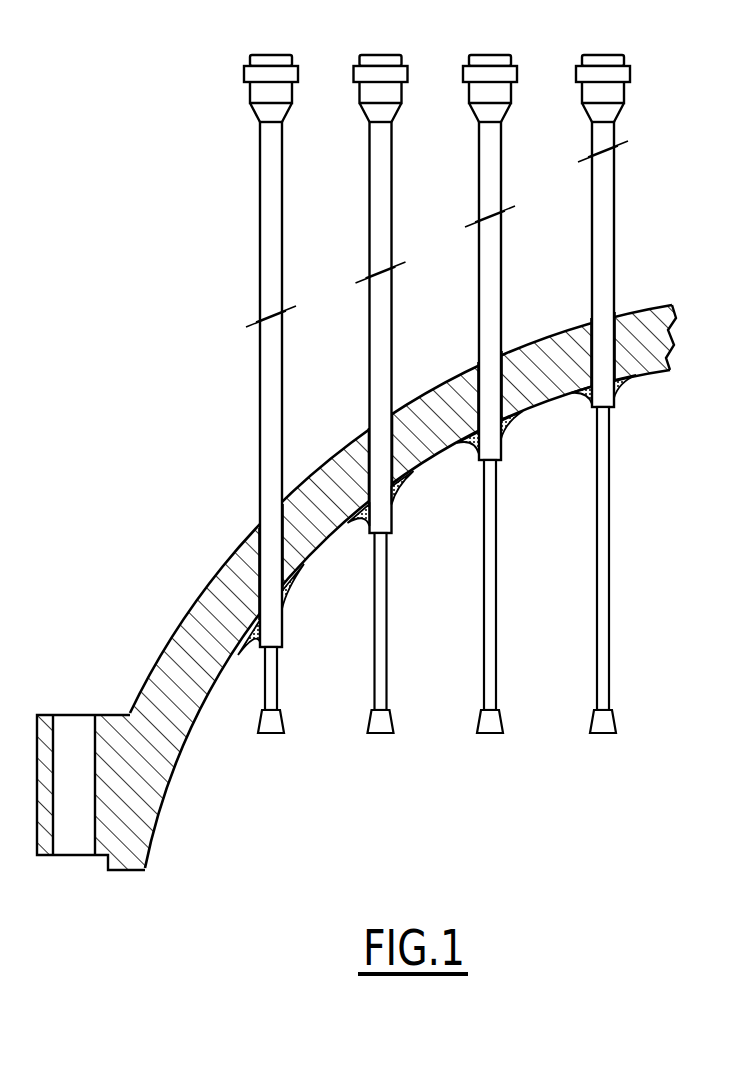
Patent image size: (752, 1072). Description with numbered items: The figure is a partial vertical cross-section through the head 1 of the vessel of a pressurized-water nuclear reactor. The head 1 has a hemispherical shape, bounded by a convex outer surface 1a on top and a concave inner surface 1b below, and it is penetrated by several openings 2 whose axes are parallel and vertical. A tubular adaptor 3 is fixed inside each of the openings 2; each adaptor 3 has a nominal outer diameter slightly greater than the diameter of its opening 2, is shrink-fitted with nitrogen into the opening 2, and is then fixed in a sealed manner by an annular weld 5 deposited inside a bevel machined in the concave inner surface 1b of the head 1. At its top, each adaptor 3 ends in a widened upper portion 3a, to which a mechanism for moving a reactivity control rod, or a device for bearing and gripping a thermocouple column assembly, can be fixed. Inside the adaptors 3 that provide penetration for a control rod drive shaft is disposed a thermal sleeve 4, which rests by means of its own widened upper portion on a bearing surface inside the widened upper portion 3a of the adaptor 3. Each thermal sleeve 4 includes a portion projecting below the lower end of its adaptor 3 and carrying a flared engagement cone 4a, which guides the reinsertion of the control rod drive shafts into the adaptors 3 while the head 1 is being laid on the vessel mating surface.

The head 1 is at (123, 713).
The convex outer surface 1a is at (193, 613).
The concave inner surface 1b is at (199, 733).
The openings 2 is at (313, 562).
The adaptor 3 is at (273, 522).
The widened upper portion 3a is at (245, 93).
The thermal sleeve 4 is at (277, 683).
The flared engagement cone 4a is at (287, 722).
The annular weld 5 is at (290, 588).